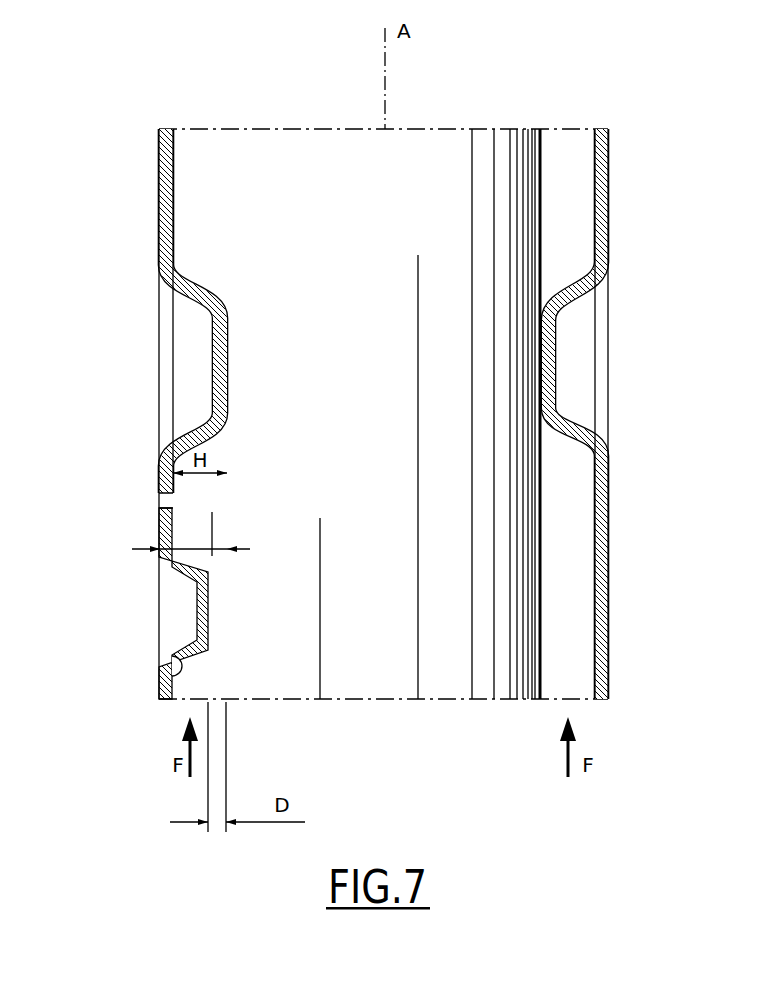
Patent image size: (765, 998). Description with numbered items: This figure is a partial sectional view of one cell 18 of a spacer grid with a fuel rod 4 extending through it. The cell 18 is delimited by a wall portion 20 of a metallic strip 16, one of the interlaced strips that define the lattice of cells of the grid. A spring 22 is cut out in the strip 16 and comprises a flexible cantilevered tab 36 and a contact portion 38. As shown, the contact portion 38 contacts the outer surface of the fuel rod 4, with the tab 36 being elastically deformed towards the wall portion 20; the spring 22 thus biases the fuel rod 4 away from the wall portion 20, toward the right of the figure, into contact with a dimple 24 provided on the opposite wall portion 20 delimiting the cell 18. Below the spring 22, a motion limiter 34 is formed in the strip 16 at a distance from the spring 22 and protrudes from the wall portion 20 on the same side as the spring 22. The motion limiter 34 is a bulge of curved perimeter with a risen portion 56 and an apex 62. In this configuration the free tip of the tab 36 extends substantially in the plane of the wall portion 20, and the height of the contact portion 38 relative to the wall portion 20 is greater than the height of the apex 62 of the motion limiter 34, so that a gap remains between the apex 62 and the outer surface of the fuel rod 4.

The fuel rod 4 is at (481, 150).
The strip 16 is at (148, 143).
The cell 18 is at (568, 152).
The wall portion 20 is at (160, 232).
The spring 22 is at (136, 289).
The dimple 24 is at (556, 370).
The motion limiter 34 is at (142, 625).
The tab 36 is at (144, 328).
The contact portion 38 is at (200, 373).
The risen portion 56 is at (172, 677).
The apex 62 is at (210, 610).